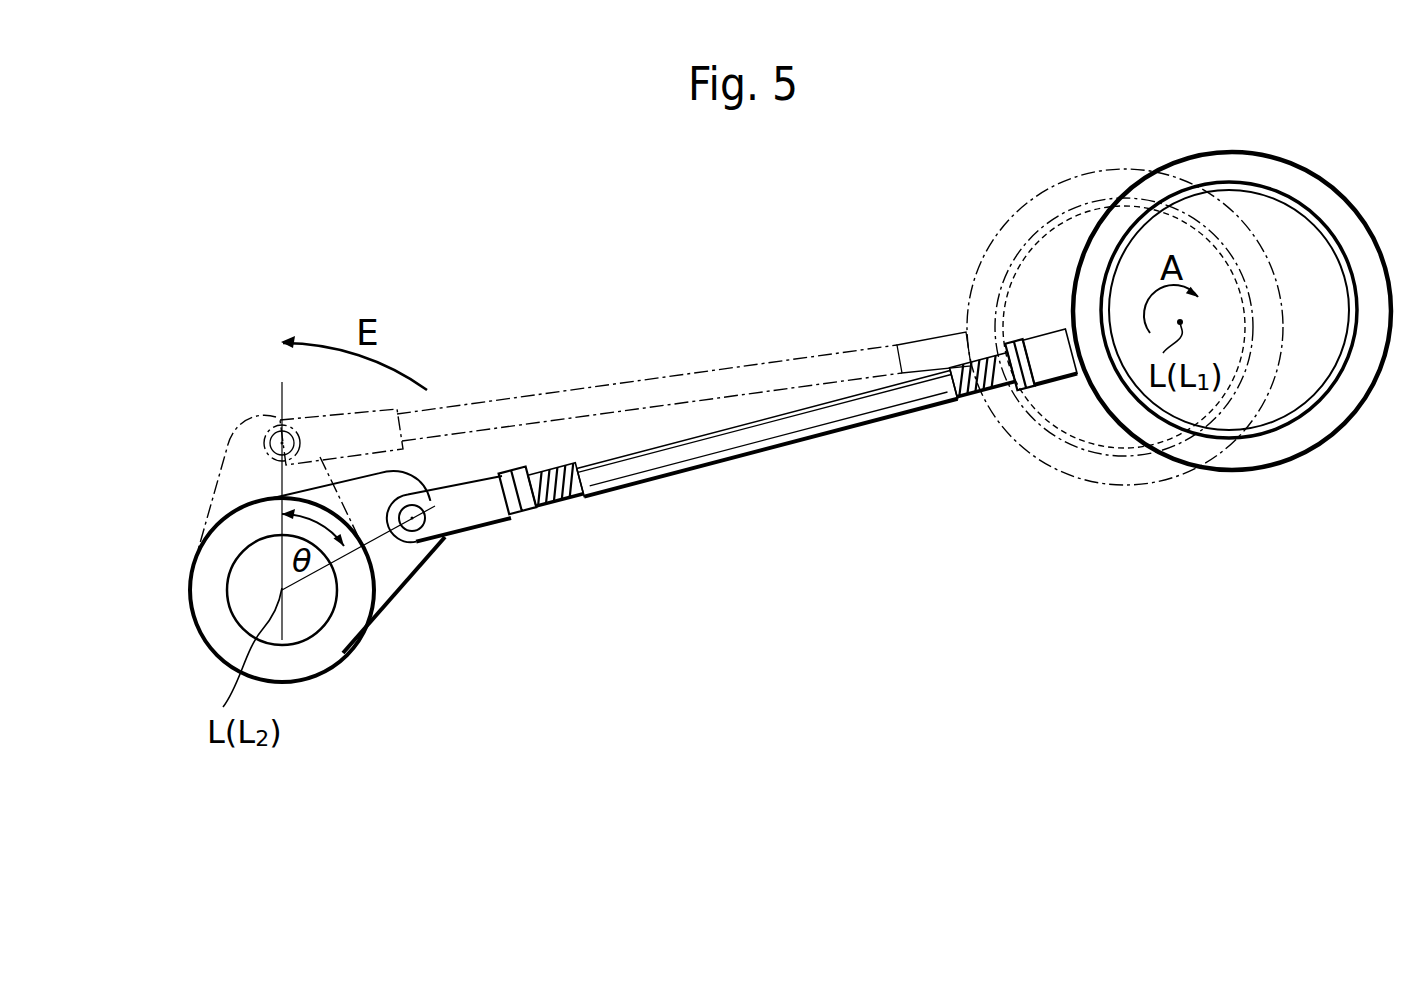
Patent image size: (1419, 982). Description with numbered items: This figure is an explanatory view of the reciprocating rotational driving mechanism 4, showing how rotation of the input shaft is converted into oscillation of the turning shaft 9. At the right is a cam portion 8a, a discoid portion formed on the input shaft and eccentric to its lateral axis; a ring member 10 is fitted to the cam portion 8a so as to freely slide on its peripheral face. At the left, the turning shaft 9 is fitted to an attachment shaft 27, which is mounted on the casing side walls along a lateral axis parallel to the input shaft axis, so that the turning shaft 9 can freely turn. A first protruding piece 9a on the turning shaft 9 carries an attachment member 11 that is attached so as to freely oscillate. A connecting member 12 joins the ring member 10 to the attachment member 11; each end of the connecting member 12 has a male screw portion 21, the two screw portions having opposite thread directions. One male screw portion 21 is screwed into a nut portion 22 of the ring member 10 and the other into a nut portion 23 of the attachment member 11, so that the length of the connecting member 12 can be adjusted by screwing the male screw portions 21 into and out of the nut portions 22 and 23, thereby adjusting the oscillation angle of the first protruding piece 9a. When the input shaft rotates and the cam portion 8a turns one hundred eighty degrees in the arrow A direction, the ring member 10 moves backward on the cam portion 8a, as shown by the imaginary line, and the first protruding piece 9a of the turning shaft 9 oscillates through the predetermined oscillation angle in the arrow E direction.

The reciprocating rotational driving mechanism 4 is at (733, 568).
The cam portion 8a is at (1317, 270).
The turning shaft 9 is at (334, 672).
The first protruding piece 9a is at (418, 587).
The ring member 10 is at (1341, 435).
The attachment member 11 is at (486, 526).
The connecting member 12 is at (794, 434).
The male screw portion 21 is at (578, 502).
The nut portion 22 is at (1025, 397).
The nut portion 23 is at (530, 524).
The attachment shaft 27 is at (245, 597).